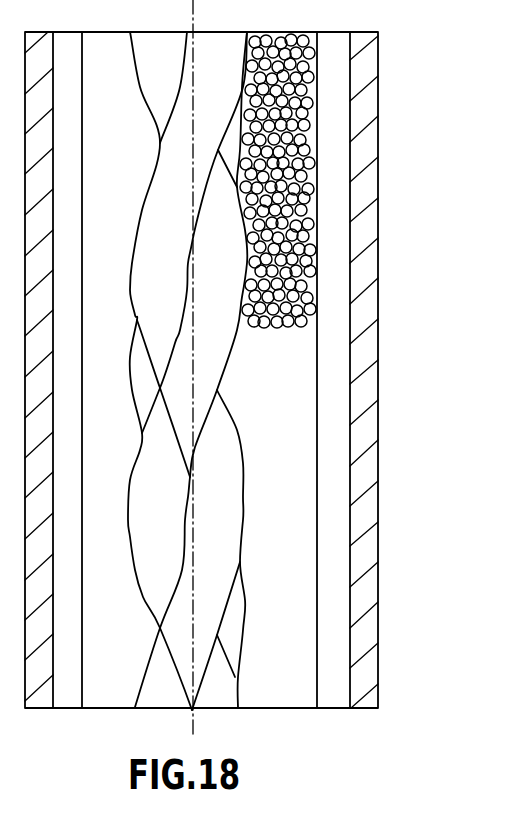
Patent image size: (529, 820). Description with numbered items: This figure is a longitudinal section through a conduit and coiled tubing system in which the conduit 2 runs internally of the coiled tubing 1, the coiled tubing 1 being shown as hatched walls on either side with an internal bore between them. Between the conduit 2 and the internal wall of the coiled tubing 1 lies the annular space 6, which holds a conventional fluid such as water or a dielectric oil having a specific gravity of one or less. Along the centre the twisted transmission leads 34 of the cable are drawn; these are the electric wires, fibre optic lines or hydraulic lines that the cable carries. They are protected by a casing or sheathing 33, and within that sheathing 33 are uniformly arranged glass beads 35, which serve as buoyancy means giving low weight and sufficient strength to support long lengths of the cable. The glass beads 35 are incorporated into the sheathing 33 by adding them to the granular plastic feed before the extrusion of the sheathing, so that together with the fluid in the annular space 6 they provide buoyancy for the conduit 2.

The coiled tubing 1 is at (367, 441).
The conduit 2 is at (320, 592).
The annular space 6 is at (333, 240).
The sheathing 33 is at (278, 472).
The transmission leads 34 is at (217, 85).
The glass beads 35 is at (279, 333).